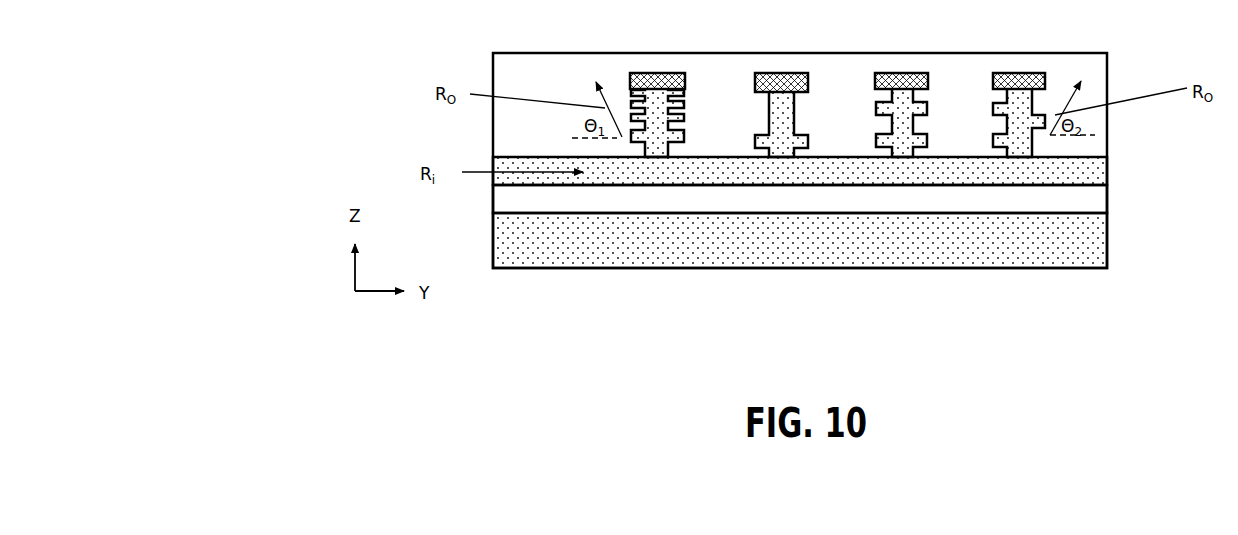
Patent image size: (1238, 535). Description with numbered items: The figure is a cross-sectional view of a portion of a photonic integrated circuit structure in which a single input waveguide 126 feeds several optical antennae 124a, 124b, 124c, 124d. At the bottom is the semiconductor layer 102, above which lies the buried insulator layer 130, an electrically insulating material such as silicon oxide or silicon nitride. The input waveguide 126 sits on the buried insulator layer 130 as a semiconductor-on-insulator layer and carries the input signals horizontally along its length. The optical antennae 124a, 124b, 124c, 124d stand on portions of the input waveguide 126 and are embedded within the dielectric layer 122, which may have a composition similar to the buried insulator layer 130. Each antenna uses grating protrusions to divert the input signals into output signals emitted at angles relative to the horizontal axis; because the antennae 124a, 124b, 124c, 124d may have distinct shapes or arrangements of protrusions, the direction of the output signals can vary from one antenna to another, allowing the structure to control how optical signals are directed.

The semiconductor layer 102 is at (1108, 250).
The dielectric layer 122 is at (1108, 84).
The optical antenna 124a is at (687, 113).
The optical antenna 124b is at (754, 91).
The optical antenna 124c is at (871, 94).
The optical antenna 124d is at (988, 94).
The input waveguide 126 is at (1101, 173).
The buried insulator layer 130 is at (1108, 203).